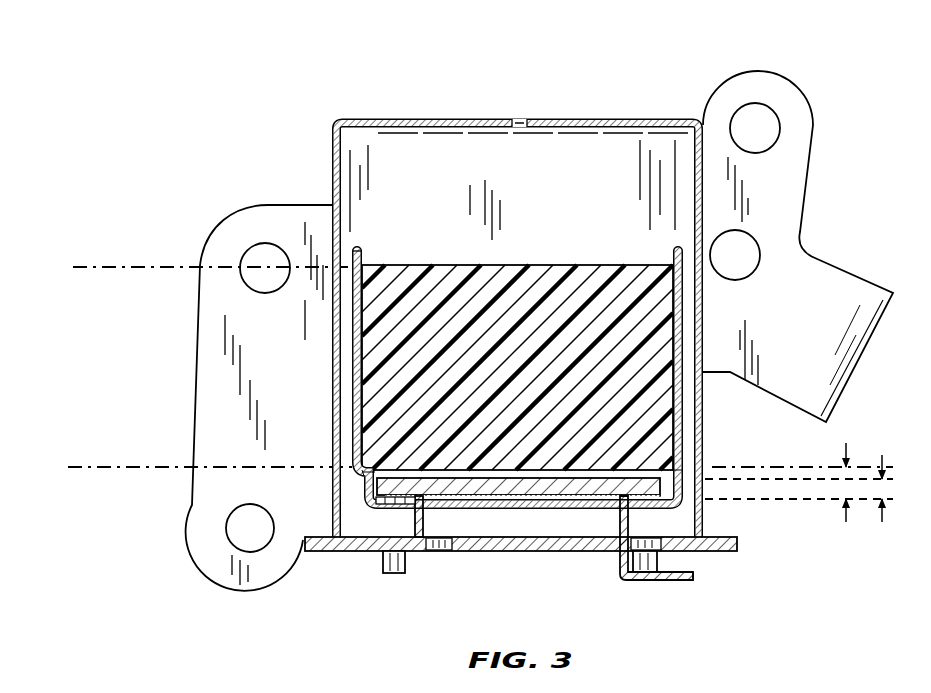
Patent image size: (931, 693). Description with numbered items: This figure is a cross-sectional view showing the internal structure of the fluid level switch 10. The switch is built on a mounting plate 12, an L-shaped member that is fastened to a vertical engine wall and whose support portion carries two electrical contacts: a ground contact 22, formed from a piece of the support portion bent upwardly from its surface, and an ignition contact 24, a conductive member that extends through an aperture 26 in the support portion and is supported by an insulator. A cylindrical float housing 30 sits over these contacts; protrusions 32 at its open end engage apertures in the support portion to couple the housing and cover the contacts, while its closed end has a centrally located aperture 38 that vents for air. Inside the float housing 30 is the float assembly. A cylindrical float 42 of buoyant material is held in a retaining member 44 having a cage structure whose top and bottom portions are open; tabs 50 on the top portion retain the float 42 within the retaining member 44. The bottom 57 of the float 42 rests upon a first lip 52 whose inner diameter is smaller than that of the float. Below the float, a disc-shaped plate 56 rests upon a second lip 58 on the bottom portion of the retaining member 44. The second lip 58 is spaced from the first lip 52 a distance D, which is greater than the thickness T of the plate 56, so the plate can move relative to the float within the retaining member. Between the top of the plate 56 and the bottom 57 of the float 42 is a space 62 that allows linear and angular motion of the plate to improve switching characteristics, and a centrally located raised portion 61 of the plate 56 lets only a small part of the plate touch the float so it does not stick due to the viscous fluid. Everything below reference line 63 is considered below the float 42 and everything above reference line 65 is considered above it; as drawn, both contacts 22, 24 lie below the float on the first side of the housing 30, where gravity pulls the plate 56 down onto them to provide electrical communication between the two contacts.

The fluid level switch 10 is at (217, 88).
The mounting plate 12 is at (784, 190).
The ground contact 22 is at (420, 517).
The ignition contact 24 is at (652, 581).
The aperture 26 is at (616, 550).
The float housing 30 is at (378, 118).
The protrusions 32 is at (380, 574).
The aperture 38 is at (520, 118).
The float 42 is at (522, 266).
The retaining member 44 is at (352, 368).
The tabs 50 is at (362, 250).
The first lip 52 is at (378, 472).
The plate 56 is at (700, 492).
The bottom of the float 57 is at (686, 470).
The second lip 58 is at (382, 515).
The raised portion 61 is at (522, 490).
The space 62 is at (366, 478).
The reference line 63 is at (112, 468).
The reference line 65 is at (117, 268).
The distance D is at (844, 499).
The thickness T is at (881, 505).